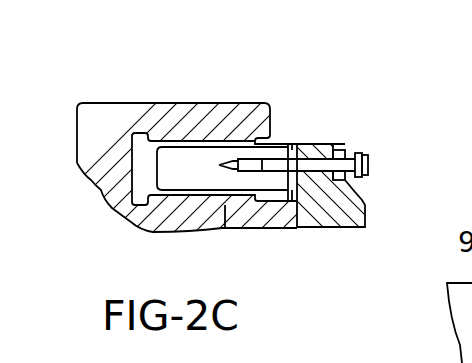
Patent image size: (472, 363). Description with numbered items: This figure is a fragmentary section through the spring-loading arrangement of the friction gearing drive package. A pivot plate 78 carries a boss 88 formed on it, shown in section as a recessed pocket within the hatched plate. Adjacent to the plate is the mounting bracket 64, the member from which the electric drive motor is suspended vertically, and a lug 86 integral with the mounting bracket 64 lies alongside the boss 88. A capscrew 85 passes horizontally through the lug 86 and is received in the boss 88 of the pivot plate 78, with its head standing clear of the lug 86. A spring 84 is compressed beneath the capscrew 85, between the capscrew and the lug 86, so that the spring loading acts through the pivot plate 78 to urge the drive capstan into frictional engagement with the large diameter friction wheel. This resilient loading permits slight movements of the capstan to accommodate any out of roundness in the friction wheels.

The pivot plate 78 is at (108, 105).
The boss 88 is at (186, 157).
The lug 86 is at (314, 145).
The spring 84 is at (345, 153).
The capscrew 85 is at (370, 160).
The mounting bracket 64 is at (400, 178).